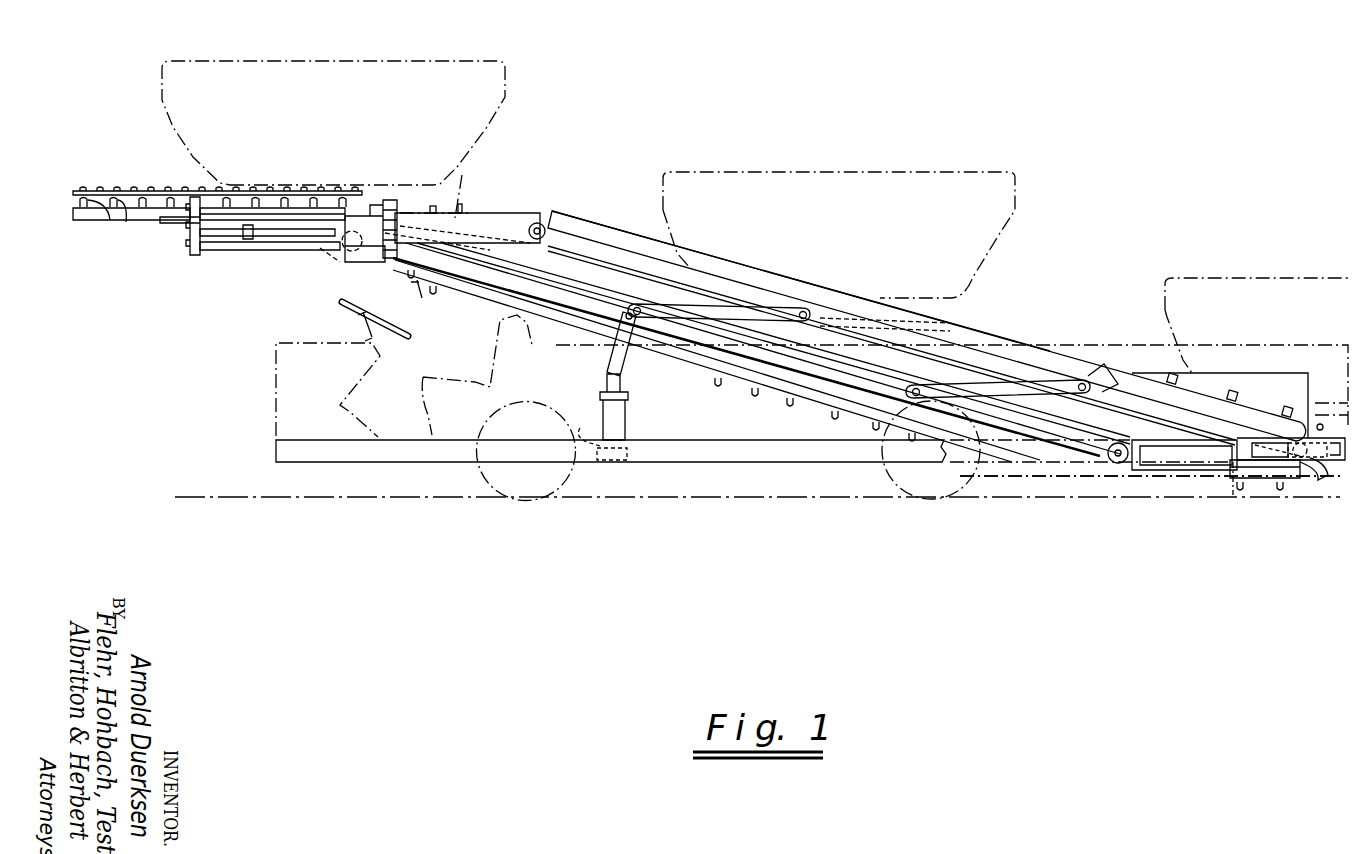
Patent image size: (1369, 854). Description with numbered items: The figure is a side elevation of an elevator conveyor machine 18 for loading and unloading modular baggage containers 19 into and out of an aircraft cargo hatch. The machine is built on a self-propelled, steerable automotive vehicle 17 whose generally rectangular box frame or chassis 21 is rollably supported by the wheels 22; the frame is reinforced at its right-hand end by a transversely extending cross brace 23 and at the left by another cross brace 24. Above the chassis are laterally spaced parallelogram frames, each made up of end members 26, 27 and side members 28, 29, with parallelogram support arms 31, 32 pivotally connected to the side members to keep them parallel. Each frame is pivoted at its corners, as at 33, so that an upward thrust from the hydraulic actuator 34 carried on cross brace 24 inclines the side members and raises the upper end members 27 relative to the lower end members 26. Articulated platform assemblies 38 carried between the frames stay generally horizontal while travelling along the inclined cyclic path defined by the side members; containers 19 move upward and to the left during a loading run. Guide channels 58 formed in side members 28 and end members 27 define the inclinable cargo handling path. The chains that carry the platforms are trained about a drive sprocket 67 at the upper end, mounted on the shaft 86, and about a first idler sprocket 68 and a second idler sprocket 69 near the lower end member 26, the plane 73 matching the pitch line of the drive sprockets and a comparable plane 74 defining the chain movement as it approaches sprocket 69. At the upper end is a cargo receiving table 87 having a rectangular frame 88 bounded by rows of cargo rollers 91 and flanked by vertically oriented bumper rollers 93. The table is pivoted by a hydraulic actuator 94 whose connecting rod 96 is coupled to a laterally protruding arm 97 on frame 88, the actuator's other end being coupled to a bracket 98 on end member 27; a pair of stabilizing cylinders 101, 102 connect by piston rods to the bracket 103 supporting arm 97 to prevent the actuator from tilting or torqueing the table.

The automotive vehicle 17 is at (270, 397).
The elevator conveyor machine 18 is at (865, 334).
The modular baggage containers 19 is at (238, 61).
The box frame or chassis 21 is at (736, 440).
The wheels 22 is at (493, 497).
The cross brace 23 is at (1325, 437).
The cross brace 24 is at (581, 423).
The end members 26 is at (1178, 466).
The end members 27 is at (491, 214).
The side members 28 is at (602, 222).
The side members 29 is at (565, 335).
The parallelogram support arm 31 is at (692, 301).
The parallelogram support arm 32 is at (986, 382).
The pivotal corner connection 33 is at (539, 222).
The hydraulic actuator 34 is at (630, 419).
The articulated platform assemblies 38 is at (972, 300).
The guide channels 58 is at (462, 214).
The drive sprocket 67 is at (333, 242).
The first idler sprocket 68 is at (1109, 463).
The second idler sprocket 69 is at (1316, 476).
The plane 73 is at (451, 200).
The plane 74 is at (1008, 477).
The shaft 86 is at (350, 252).
The cargo receiving table 87 is at (82, 225).
The rectangular frame 88 is at (75, 216).
The cargo rollers 91 is at (138, 200).
The bumper rollers 93 is at (165, 185).
The hydraulic actuator 94 is at (300, 222).
The connecting rod 96 is at (240, 248).
The laterally protruding arm 97 is at (198, 242).
The bracket 98 is at (402, 270).
The stabilizing cylinder 101 is at (363, 208).
The stabilizing cylinder 102 is at (251, 240).
The bracket 103 is at (190, 212).